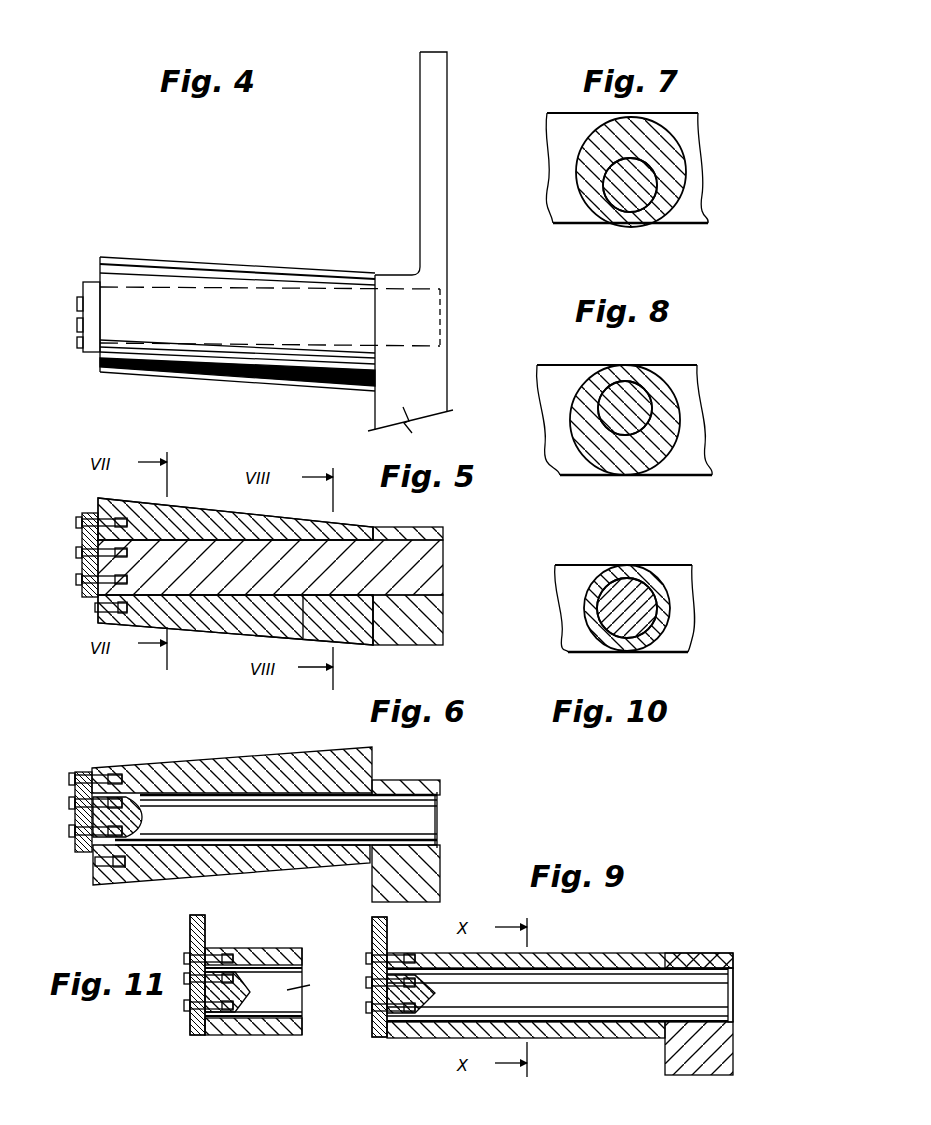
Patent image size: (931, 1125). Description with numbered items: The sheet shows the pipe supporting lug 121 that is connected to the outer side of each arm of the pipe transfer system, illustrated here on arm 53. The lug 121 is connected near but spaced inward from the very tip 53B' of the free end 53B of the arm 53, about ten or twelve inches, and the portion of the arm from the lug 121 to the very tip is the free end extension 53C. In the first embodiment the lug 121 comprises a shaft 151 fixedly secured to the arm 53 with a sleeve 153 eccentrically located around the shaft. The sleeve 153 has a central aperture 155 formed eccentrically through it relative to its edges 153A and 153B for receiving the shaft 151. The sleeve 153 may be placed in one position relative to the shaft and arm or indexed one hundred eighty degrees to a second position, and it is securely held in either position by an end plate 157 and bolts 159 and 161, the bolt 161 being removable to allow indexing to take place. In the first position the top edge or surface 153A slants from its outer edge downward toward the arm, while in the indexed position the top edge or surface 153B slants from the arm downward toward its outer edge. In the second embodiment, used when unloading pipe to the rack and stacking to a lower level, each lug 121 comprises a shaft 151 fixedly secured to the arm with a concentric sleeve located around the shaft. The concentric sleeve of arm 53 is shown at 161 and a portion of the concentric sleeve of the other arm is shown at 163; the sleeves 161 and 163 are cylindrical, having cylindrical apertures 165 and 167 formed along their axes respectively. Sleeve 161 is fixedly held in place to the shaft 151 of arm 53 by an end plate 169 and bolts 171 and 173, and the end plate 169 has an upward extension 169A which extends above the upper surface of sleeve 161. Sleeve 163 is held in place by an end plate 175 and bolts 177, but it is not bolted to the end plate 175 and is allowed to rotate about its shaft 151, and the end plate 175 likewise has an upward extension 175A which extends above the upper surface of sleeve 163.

In FIG. 4, the arm 53 is at (447, 383).
In FIG. 10, the arm 53 is at (678, 655).
In FIG. 5, the arm 53 is at (445, 635).
In FIG. 6, the arm 53 is at (442, 863).
In FIG. 9, the arm 53 is at (733, 1040).
In FIG. 4, the free end 53B is at (468, 231).
In FIG. 4, the very tip 53B' is at (487, 37).
In FIG. 4, the free end extension 53C is at (403, 267).
In FIG. 4, the pipe supporting lug 121 is at (275, 267).
In FIG. 9, the pipe supporting lug 121 is at (548, 1042).
In FIG. 11, the pipe supporting lug 121 is at (223, 1045).
In FIG. 10, the shaft 151 is at (612, 613).
In FIG. 5, the shaft 151 is at (337, 540).
In FIG. 9, the shaft 151 is at (590, 978).
In FIG. 11, the shaft 151 is at (277, 1000).
In FIG. 5, the sleeve 153 is at (247, 528).
In FIG. 5, the top edge or surface 153A is at (197, 512).
In FIG. 5, the top edge or surface 153B is at (203, 627).
In FIG. 6, the top edge or surface 153B is at (210, 760).
In FIG. 5, the central aperture 155 is at (303, 600).
In FIG. 5, the end plate 157 is at (92, 608).
In FIG. 5, the bolts 159 is at (76, 552).
In FIG. 6, the bolts 159 is at (70, 803).
In FIG. 10, the bolt / concentric sleeve 161 is at (658, 650).
In FIG. 5, the bolt / concentric sleeve 161 is at (73, 520).
In FIG. 6, the bolt / concentric sleeve 161 is at (70, 779).
In FIG. 9, the bolt / concentric sleeve 161 is at (548, 953).
In FIG. 11, the concentric sleeve 163 is at (245, 948).
In FIG. 9, the cylindrical aperture 165 is at (607, 1025).
In FIG. 11, the cylindrical aperture 167 is at (270, 1030).
In FIG. 9, the end plate 169 is at (375, 1040).
In FIG. 9, the upward extension 169A is at (388, 928).
In FIG. 9, the bolts 171 is at (367, 1007).
In FIG. 9, the bolts 173 is at (368, 957).
In FIG. 11, the end plate 175 is at (197, 1037).
In FIG. 11, the upward extension 175A is at (190, 937).
In FIG. 11, the bolts 177 is at (185, 978).